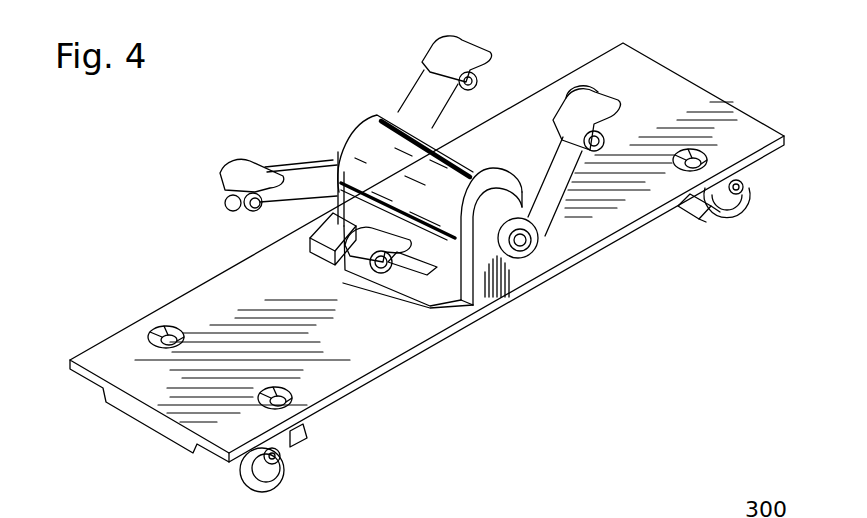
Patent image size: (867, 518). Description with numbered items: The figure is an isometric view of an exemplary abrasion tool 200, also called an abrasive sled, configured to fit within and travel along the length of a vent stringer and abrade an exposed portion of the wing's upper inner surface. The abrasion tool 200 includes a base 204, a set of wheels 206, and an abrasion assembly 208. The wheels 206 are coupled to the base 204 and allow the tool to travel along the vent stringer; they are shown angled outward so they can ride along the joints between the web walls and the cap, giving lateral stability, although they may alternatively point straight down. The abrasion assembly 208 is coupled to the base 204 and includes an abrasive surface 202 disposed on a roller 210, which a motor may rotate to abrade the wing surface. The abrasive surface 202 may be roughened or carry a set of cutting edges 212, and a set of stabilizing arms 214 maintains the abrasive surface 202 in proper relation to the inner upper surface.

The abrasion tool 200 is at (106, 130).
The abrasive surface 202 is at (371, 146).
The base 204 is at (676, 92).
The set of wheels 206 is at (735, 216).
The abrasion assembly 208 is at (340, 87).
The roller 210 is at (460, 222).
The set of cutting edges 212 is at (342, 178).
The set of stabilizing arms 214 is at (248, 172).